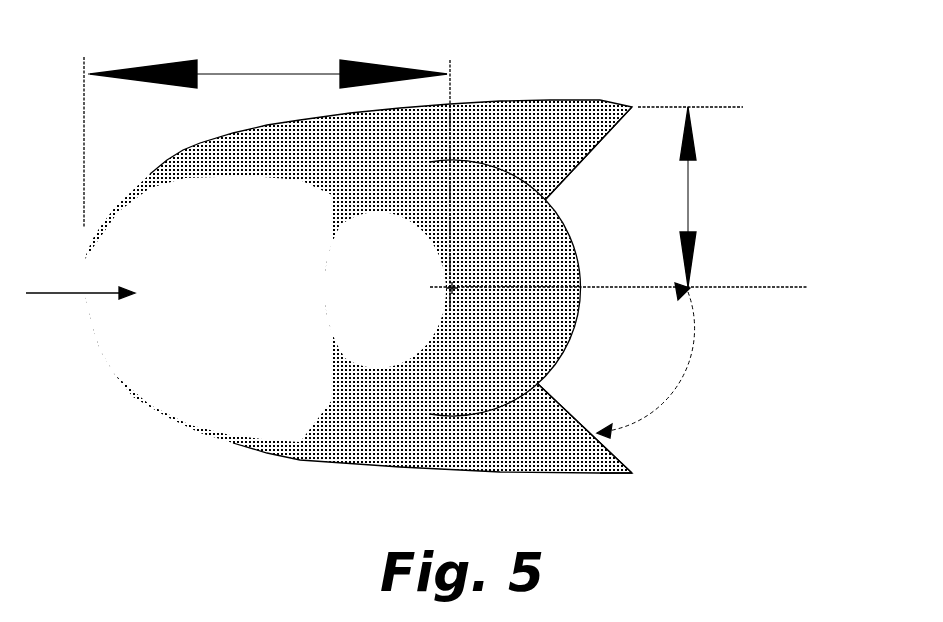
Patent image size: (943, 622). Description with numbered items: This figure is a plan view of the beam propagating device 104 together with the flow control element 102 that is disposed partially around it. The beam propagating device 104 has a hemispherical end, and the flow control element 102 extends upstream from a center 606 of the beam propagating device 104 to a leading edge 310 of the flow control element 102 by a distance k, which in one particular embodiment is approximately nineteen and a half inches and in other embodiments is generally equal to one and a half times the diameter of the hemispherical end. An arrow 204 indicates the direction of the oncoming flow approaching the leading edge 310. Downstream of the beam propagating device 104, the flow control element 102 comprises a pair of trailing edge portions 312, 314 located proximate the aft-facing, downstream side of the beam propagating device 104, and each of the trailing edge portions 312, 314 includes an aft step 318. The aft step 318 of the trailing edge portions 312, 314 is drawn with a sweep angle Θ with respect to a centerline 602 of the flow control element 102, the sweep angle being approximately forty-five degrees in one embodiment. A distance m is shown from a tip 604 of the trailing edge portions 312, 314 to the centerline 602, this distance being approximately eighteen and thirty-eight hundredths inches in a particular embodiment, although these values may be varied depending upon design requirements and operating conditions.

The flow control element 102 is at (260, 385).
The beam propagating device 104 is at (437, 417).
The flow direction 204 is at (80, 314).
The leading edge 310 is at (83, 277).
The trailing edge portion 312 is at (450, 292).
The trailing edge portion 314 is at (572, 127).
The aft step 318 is at (572, 167).
The centerline 602 is at (727, 287).
The tip 604 is at (628, 105).
The center 606 is at (448, 148).